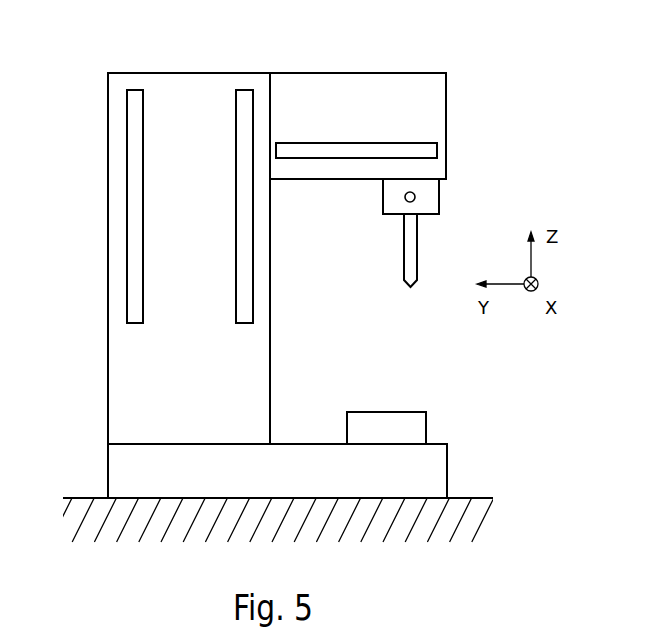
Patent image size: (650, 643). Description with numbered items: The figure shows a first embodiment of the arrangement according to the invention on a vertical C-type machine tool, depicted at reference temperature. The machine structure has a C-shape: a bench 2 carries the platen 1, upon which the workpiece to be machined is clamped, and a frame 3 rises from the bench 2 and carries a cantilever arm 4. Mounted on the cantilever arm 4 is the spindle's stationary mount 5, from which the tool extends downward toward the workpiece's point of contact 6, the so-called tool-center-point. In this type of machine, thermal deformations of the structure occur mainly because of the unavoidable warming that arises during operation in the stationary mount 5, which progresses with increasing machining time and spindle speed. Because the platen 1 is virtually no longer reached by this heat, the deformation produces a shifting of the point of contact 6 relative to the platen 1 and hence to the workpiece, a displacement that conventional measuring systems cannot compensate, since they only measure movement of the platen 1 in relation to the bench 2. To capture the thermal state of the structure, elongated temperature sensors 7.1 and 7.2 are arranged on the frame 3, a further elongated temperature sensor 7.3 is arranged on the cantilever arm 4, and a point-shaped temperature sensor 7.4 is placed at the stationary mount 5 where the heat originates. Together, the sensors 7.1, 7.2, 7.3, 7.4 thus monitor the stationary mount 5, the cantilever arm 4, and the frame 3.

The platen 1 is at (422, 425).
The bench 2 is at (442, 469).
The frame 3 is at (117, 395).
The cantilever arm 4 is at (373, 80).
The stationary mount 5 is at (433, 204).
The point of contact 6 is at (410, 260).
The elongated temperature sensor 7.1 is at (131, 256).
The elongated temperature sensor 7.2 is at (252, 295).
The elongated temperature sensor 7.3 is at (432, 150).
The point-shaped temperature sensor 7.4 is at (405, 198).